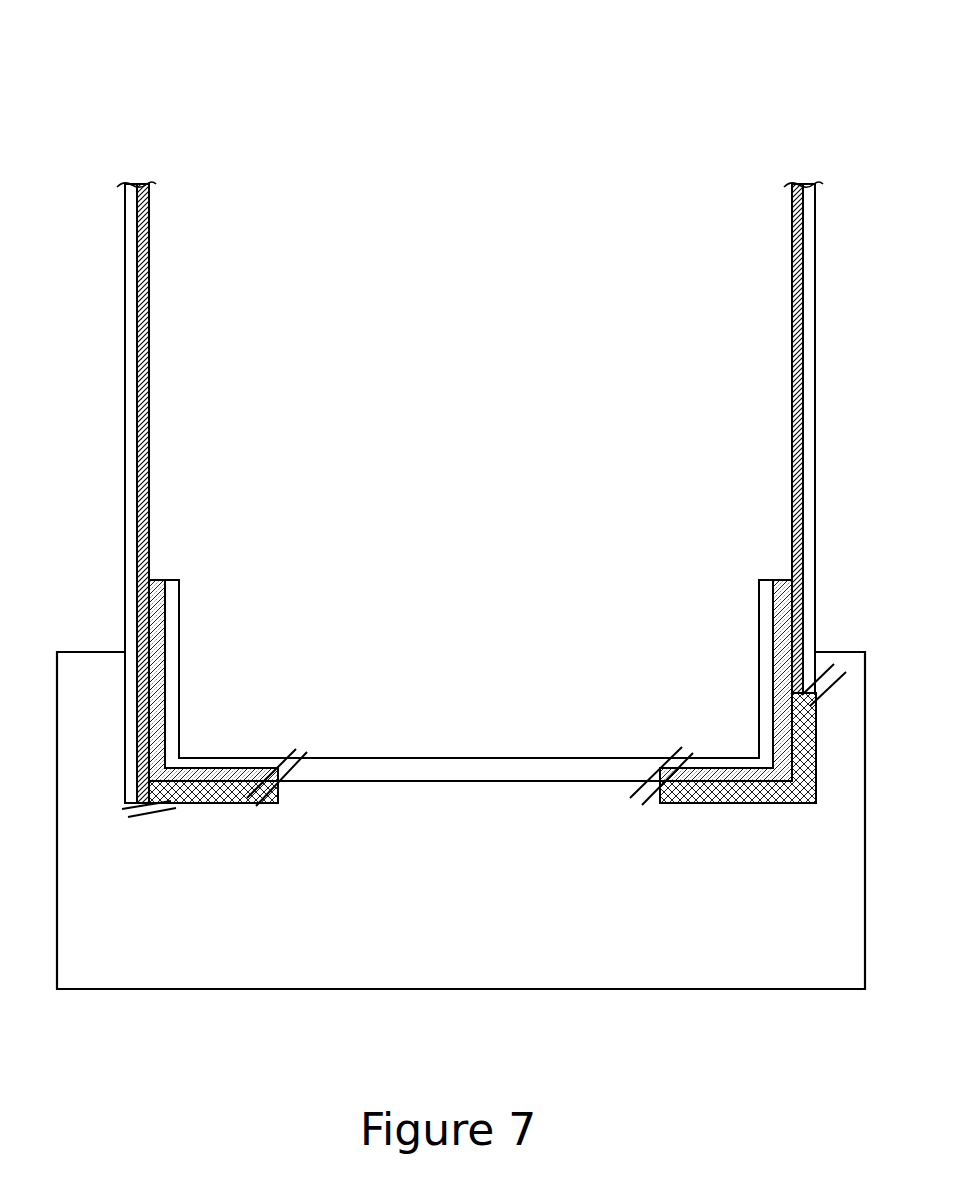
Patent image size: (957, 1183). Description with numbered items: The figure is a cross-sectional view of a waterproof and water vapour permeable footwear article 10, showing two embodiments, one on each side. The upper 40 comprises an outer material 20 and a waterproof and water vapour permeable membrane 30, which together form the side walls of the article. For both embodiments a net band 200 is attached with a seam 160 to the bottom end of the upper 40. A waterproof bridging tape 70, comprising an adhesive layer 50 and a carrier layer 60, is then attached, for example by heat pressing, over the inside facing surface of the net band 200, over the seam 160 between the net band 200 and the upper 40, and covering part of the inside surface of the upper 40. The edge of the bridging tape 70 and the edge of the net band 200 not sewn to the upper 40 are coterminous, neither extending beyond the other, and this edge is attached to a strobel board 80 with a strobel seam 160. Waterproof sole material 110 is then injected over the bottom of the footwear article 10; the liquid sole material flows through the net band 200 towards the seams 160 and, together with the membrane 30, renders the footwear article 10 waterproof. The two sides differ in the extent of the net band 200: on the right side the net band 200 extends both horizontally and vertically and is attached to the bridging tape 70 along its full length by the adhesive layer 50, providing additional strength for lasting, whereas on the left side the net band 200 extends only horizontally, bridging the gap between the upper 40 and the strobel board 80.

The footwear article 10 is at (742, 60).
The outer material 20 is at (130, 247).
The waterproof and water vapour permeable membrane 30 is at (233, 205).
The upper 40 is at (470, 492).
The adhesive layer 50 is at (158, 643).
The carrier layer 60 is at (254, 600).
The waterproof bridging tape 70 is at (470, 680).
The strobel board 80 is at (469, 768).
The sole 110 is at (670, 970).
The seam 160 is at (289, 751).
The net band 200 is at (210, 796).